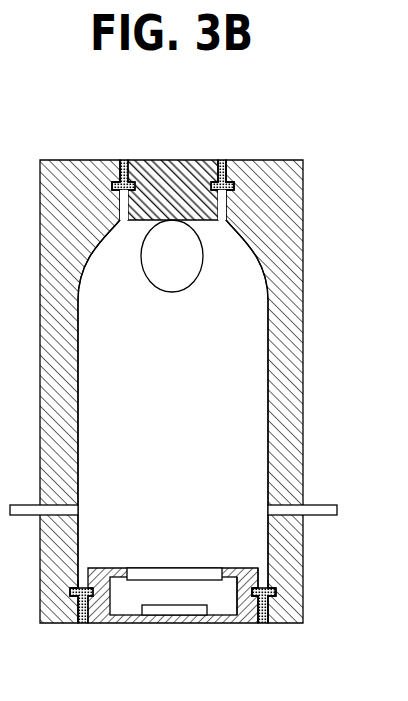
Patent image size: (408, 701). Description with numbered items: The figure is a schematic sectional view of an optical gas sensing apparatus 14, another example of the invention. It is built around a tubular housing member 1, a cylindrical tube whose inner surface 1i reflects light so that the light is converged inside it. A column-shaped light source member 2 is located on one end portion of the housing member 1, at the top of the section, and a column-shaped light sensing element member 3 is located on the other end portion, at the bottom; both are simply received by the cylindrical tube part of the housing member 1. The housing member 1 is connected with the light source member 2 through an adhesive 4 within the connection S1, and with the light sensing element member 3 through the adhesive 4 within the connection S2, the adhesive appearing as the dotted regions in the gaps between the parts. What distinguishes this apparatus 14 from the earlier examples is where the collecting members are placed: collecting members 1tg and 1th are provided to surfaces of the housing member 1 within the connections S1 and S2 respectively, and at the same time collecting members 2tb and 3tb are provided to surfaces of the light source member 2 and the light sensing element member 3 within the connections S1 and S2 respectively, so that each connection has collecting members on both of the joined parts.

The optical gas sensing apparatus 14 is at (192, 376).
The housing member 1 is at (192, 391).
The inner surface of case 1i is at (268, 343).
The collecting member 1tg is at (233, 184).
The collecting member 1th is at (277, 590).
The light source member 2 is at (172, 196).
The collecting member 2tb is at (215, 165).
The light sensing element member 3 is at (169, 625).
The collecting member 3tb is at (250, 604).
The adhesive 4 is at (229, 171).
The connection S1 is at (223, 150).
The connection S2 is at (265, 634).